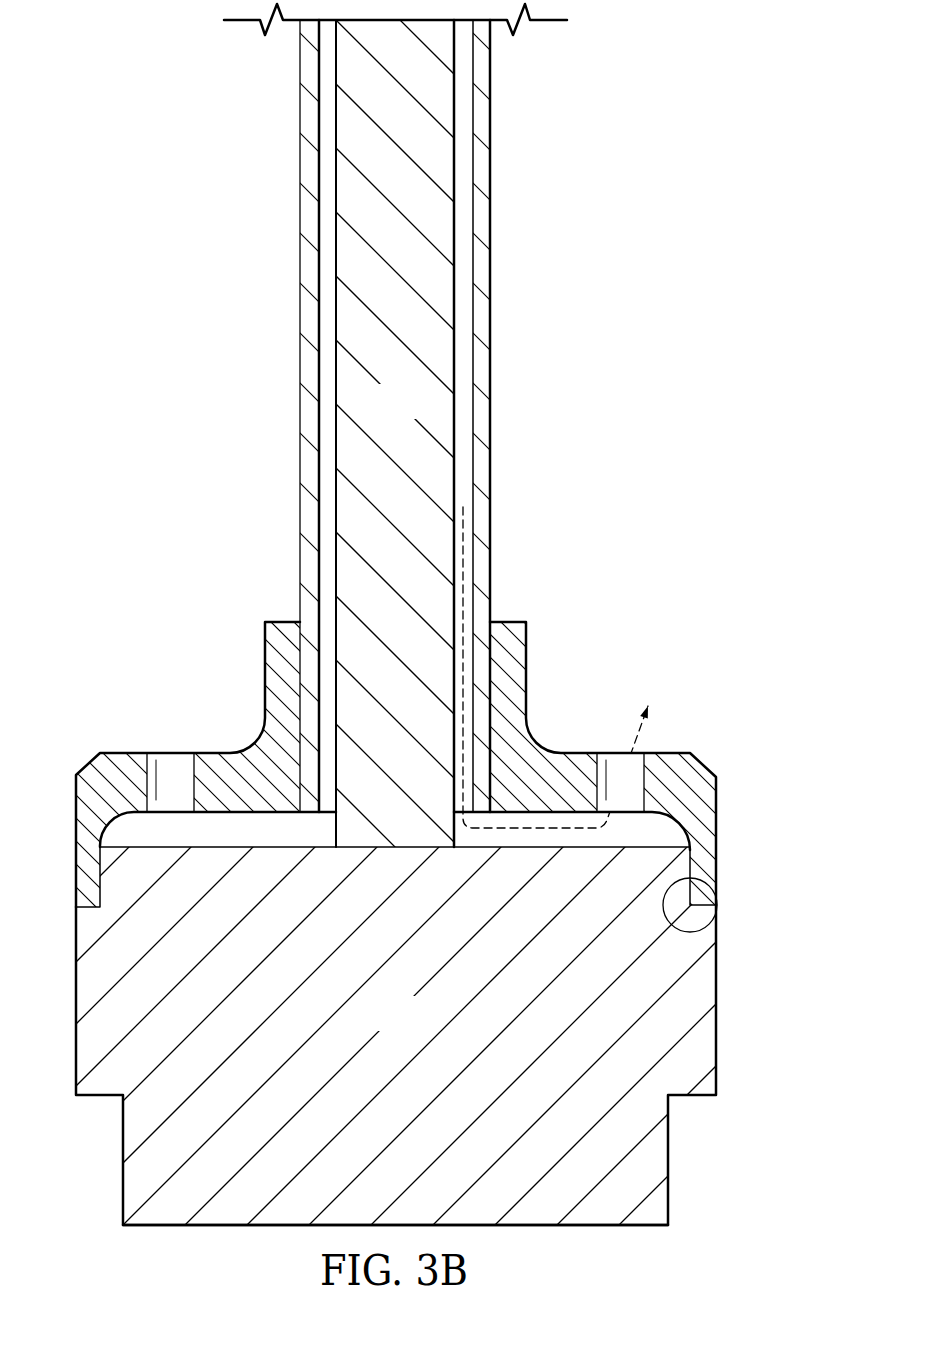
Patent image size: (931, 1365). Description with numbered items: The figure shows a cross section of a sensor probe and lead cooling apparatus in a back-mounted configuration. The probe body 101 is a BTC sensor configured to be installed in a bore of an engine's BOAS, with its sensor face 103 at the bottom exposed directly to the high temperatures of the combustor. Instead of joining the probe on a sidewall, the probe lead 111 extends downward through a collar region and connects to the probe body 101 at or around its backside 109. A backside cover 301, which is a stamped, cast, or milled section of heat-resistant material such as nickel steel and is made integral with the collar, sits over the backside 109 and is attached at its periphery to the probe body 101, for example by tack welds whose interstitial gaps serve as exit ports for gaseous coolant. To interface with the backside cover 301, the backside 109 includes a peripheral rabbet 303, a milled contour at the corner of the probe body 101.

The probe body 101 is at (415, 1026).
The sensor face 103 is at (593, 1227).
The backside 109 is at (647, 845).
The probe lead 111 is at (415, 415).
The backside cover 301 is at (205, 705).
The peripheral rabbet 303 is at (716, 922).